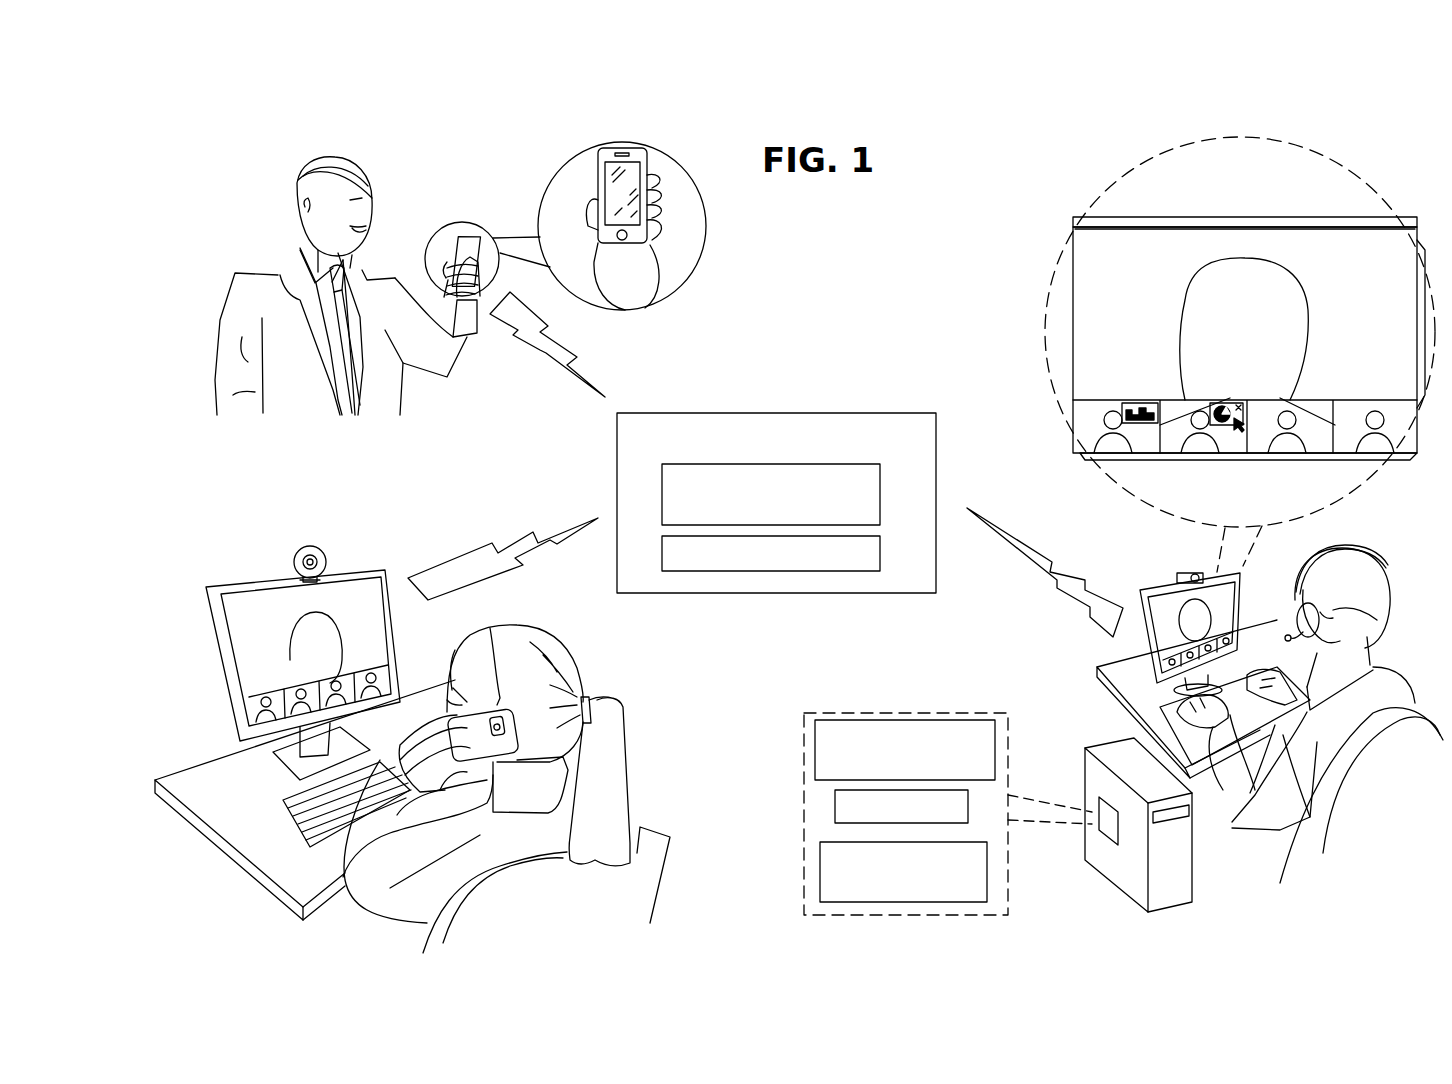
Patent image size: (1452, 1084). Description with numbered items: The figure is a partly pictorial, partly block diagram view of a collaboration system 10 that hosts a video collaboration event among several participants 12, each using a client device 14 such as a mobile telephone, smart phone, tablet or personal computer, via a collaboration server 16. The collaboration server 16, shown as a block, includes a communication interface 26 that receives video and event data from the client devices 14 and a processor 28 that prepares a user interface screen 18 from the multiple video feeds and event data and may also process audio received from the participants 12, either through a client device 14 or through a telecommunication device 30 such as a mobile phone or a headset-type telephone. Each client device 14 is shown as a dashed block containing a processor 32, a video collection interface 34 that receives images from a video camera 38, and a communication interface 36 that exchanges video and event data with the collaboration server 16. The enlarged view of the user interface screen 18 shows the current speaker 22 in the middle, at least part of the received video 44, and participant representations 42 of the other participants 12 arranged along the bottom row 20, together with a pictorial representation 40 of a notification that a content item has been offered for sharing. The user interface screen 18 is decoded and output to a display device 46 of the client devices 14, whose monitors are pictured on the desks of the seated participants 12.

The collaboration system 10 is at (958, 177).
The participant 12 is at (360, 175).
The client device 14 is at (678, 538).
The collaboration server 16 is at (698, 413).
The user interface screen 18 is at (797, 458).
The bottom row 20 is at (1082, 438).
The current speaker 22 is at (1290, 272).
The communication interface 26 is at (662, 492).
The processor 28 is at (662, 553).
The telecommunication device 30 is at (648, 148).
The processor 32 is at (835, 810).
The video collection interface 34 is at (815, 750).
The communication interface 36 is at (820, 872).
The video camera 38 is at (294, 562).
The pictorial representation 40 is at (1140, 403).
The participant representation 42 is at (1191, 410).
The video 44 is at (1201, 228).
The display device 46 is at (1097, 228).